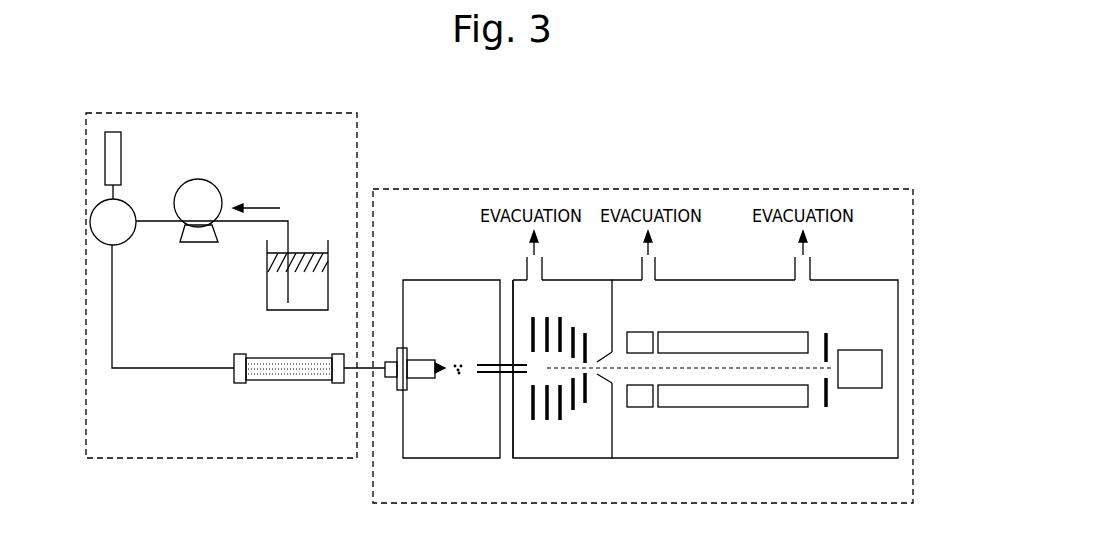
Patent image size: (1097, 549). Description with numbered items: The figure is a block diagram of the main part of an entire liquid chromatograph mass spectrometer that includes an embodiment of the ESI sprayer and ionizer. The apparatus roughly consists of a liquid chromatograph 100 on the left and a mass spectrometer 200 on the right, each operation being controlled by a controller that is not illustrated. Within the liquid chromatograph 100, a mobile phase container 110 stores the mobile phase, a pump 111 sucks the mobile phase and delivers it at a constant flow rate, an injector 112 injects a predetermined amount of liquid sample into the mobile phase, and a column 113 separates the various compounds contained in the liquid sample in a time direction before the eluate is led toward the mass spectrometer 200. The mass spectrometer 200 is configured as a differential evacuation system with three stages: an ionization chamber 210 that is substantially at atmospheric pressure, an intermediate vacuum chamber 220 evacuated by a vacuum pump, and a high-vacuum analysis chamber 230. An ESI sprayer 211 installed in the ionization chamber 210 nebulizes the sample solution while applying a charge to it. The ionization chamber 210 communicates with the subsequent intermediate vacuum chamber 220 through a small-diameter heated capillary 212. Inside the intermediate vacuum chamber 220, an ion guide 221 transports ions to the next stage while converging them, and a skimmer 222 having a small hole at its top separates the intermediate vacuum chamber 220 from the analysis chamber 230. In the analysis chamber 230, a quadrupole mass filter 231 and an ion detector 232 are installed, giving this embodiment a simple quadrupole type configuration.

The liquid chromatograph 100 is at (297, 115).
The mobile phase container 110 is at (265, 292).
The pump 111 is at (203, 245).
The injector 112 is at (132, 240).
The column 113 is at (265, 380).
The mass spectrometer 200 is at (715, 190).
The ionization chamber 210 is at (465, 445).
The ESI sprayer 211 is at (415, 382).
The heated capillary 212 is at (492, 363).
The intermediate vacuum chamber 220 is at (548, 445).
The ion guide 221 is at (568, 320).
The skimmer 222 is at (602, 373).
The analysis chamber 230 is at (648, 445).
The quadrupole mass filter 231 is at (728, 330).
The ion detector 232 is at (861, 350).